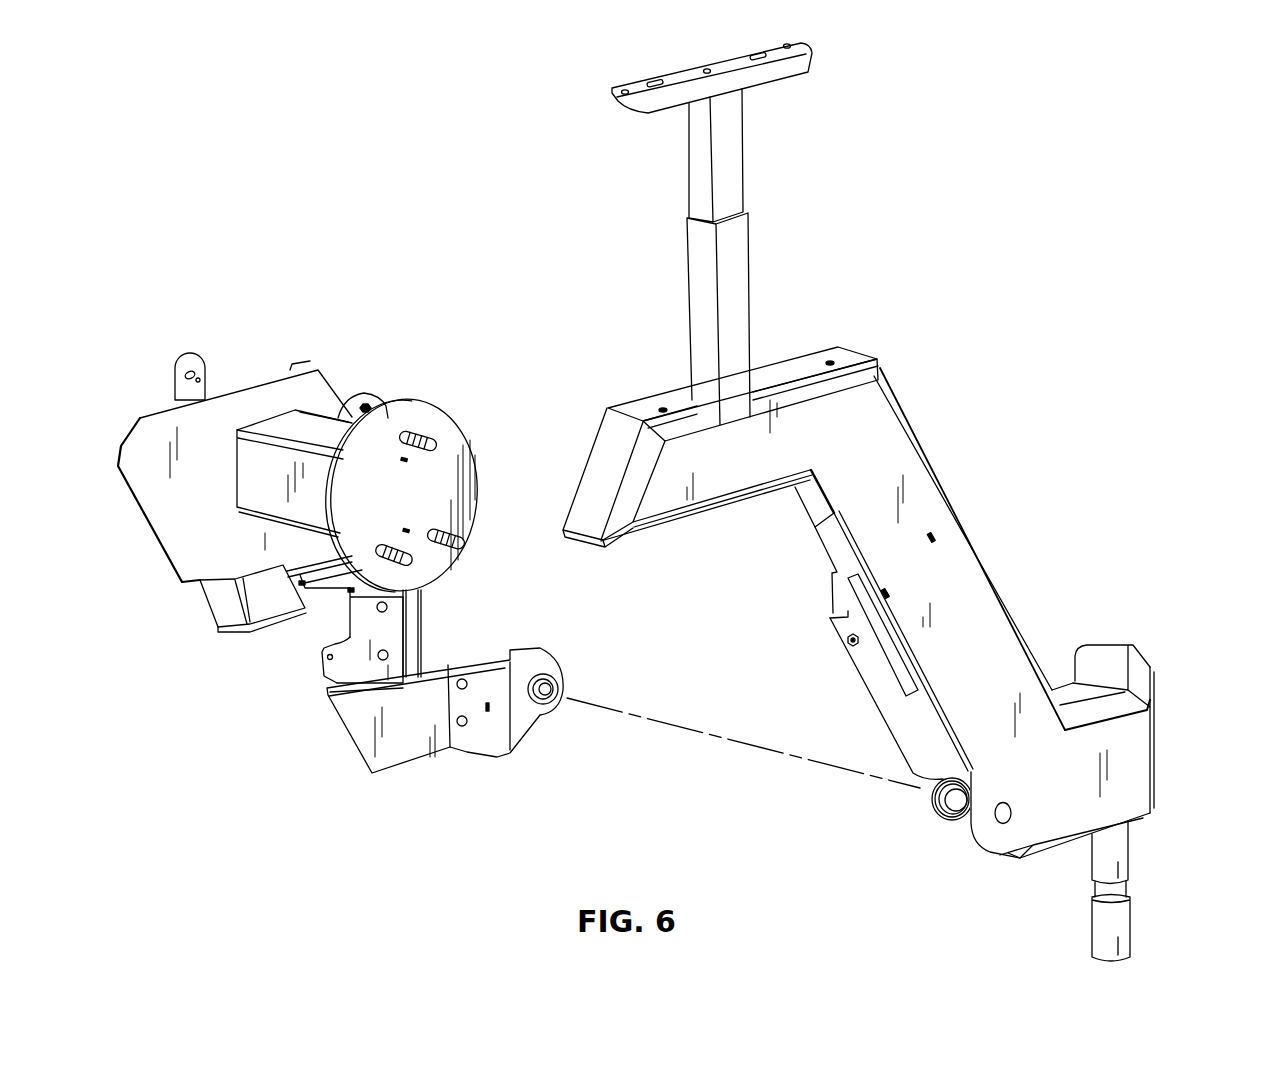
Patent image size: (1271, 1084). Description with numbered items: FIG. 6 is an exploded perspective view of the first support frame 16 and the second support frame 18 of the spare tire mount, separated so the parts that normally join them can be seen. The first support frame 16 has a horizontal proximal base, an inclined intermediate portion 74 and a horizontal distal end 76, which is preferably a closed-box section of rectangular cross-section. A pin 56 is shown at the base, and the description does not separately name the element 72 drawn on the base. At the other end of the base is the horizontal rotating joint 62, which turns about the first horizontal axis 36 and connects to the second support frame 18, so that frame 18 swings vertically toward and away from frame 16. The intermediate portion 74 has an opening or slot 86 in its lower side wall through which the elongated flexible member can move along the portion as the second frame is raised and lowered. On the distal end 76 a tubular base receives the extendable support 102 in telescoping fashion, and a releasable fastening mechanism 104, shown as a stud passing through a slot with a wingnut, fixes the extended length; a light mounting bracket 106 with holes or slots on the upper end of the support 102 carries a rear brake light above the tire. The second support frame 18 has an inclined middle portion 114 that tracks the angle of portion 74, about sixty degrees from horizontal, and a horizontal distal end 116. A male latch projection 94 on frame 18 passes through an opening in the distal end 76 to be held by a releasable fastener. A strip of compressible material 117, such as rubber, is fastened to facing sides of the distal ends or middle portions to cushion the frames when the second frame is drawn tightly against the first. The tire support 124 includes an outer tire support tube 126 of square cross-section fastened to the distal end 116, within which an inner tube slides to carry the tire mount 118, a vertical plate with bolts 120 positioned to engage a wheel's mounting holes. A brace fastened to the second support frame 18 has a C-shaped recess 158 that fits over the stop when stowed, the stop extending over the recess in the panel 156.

The first support frame 16 is at (1005, 508).
The second support frame 18 is at (410, 780).
The first horizontal axis 36 is at (731, 742).
The pin 56 is at (1118, 857).
The horizontal rotating joint 62 is at (960, 810).
The stop block 72 is at (1100, 663).
The intermediate portion 74 is at (880, 445).
The distal end 76 is at (790, 355).
The opening in middle portion 86 is at (792, 510).
The male projection for latch 94 is at (190, 360).
The extendable support 102 is at (698, 162).
The releasable fastening mechanism 104 is at (695, 243).
The mounting bracket 106 is at (637, 84).
The middle portion of second support frame 114 is at (447, 617).
The distal end of second support frame 116 is at (246, 385).
The strip of compressible material 117 is at (585, 543).
The tire mount 118 is at (448, 425).
The bolts 120 is at (467, 545).
The tire support 124 is at (303, 435).
The outer tire support tube 126 is at (323, 428).
The panel 156 is at (350, 663).
The recess in brace 158 is at (323, 637).